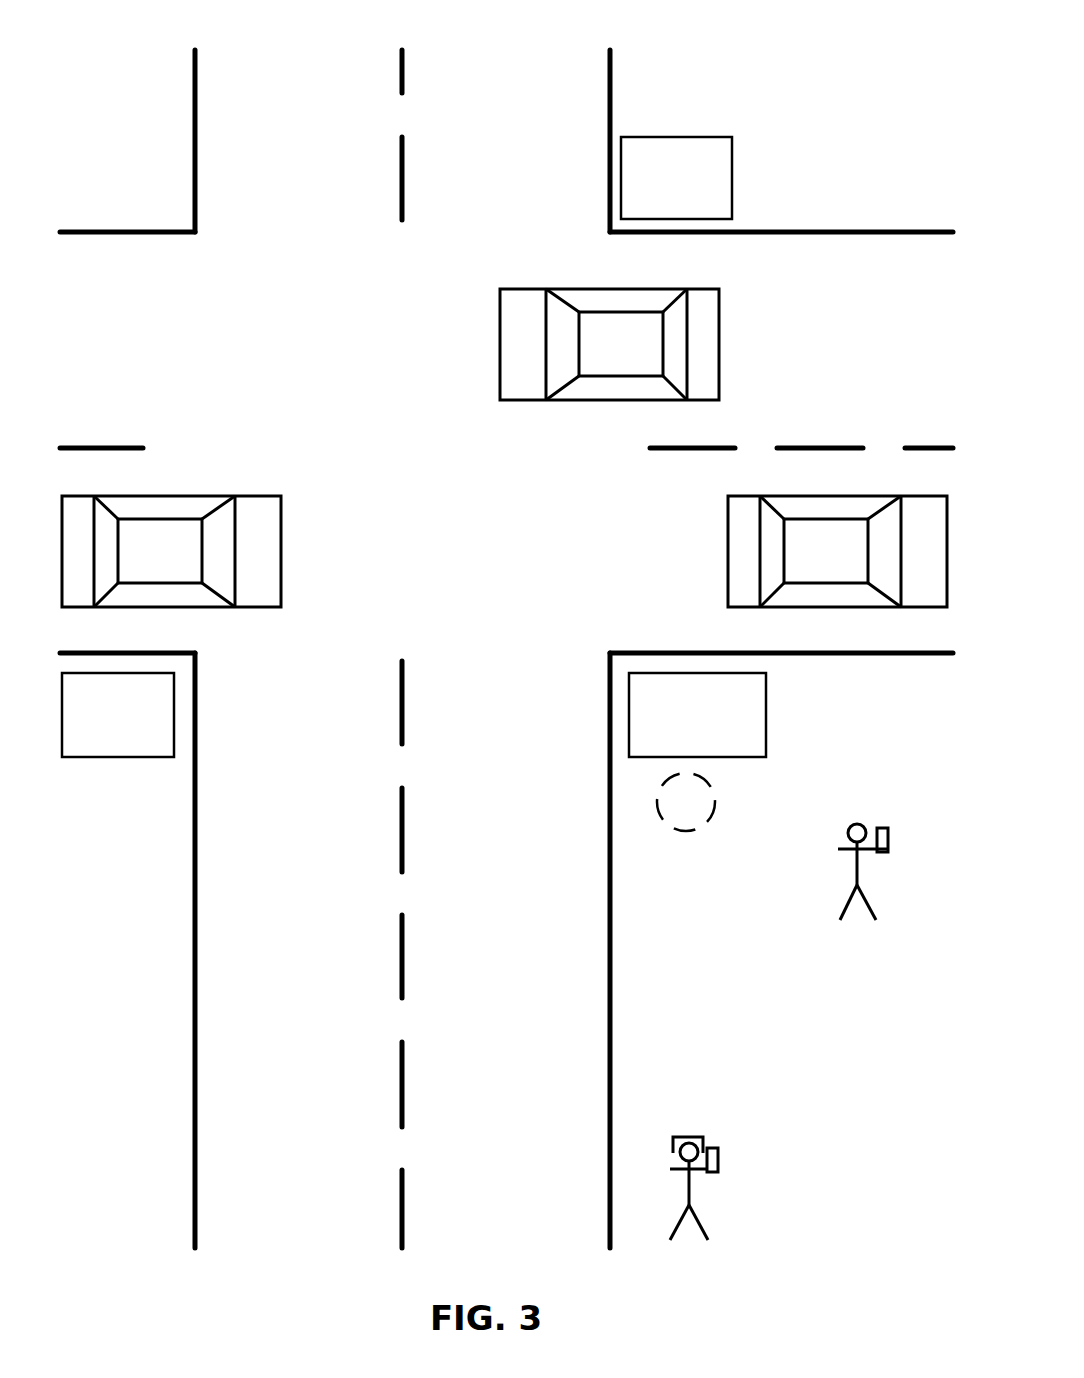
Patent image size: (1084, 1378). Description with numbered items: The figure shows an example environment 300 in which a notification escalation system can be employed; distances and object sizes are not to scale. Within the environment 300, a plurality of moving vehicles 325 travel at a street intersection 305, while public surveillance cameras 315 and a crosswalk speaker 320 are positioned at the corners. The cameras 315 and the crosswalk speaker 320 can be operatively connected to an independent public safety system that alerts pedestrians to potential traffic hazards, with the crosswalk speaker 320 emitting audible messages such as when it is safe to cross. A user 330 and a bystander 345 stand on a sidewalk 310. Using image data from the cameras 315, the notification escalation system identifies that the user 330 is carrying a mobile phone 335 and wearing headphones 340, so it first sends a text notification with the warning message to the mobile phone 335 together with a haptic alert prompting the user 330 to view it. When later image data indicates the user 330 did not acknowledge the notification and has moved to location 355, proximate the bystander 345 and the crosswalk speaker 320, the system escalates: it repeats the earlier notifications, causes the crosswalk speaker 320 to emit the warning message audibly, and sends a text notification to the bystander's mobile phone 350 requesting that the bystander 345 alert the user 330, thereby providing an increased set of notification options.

The environment 300 is at (100, 31).
The street intersection 305 is at (500, 472).
The sidewalk 310 is at (876, 994).
The public surveillance cameras 315 is at (733, 145).
The crosswalk speaker 320 is at (767, 713).
The moving vehicles 325 is at (522, 290).
The user 330 is at (708, 1237).
The mobile phone 335 is at (719, 1155).
The headphones 340 is at (700, 1137).
The bystander 345 is at (877, 917).
The mobile phone 350 is at (889, 836).
The location 355 is at (716, 800).